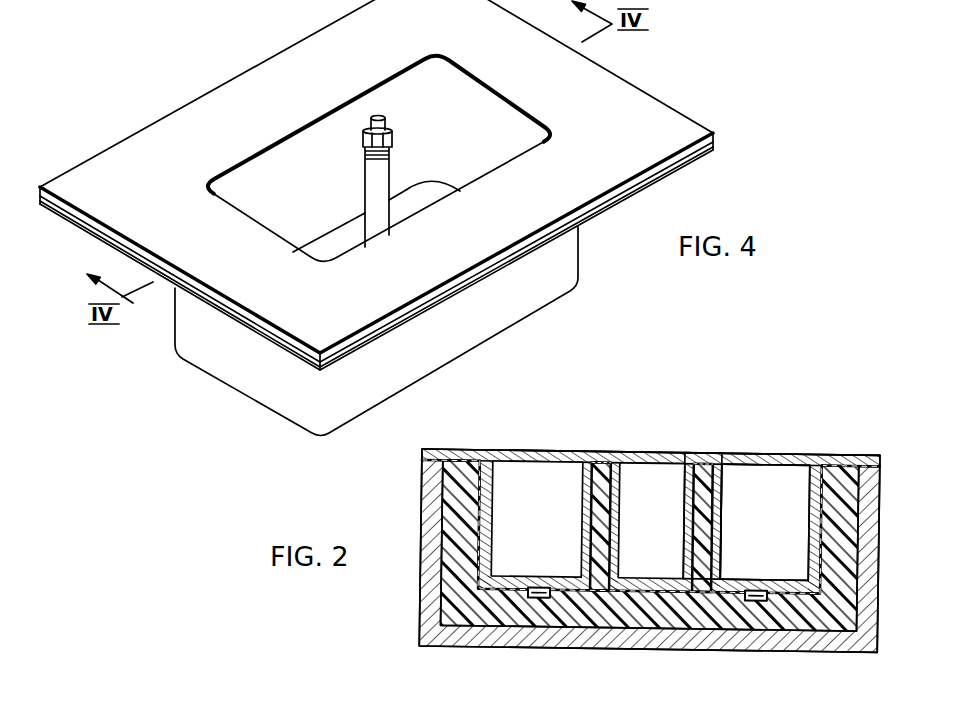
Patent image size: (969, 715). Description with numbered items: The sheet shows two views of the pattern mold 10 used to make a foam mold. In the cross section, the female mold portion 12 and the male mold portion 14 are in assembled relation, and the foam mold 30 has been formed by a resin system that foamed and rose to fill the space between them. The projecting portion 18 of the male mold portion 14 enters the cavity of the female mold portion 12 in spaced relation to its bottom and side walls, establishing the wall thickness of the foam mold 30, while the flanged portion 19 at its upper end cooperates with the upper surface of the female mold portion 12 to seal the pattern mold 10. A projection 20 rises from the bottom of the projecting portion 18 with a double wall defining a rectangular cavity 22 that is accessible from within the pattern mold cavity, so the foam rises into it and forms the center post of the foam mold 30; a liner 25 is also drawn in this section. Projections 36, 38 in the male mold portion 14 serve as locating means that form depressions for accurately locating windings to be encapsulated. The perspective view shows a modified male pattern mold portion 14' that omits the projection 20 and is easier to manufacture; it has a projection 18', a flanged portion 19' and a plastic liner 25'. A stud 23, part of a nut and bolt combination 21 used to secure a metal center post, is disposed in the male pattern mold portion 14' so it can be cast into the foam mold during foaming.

In FIG. 2, the pattern mold 10 is at (649, 569).
In FIG. 2, the female mold portion 12 is at (628, 555).
In FIG. 2, the male mold portion 14 is at (650, 501).
In FIG. 4, the male pattern mold portion 14' is at (376, 185).
In FIG. 2, the projecting portion 18 is at (765, 522).
In FIG. 4, the projection 18' is at (358, 331).
In FIG. 2, the flanged portion 19 is at (630, 446).
In FIG. 4, the flanged portion 19' is at (374, 252).
In FIG. 2, the projection 20 is at (715, 502).
In FIG. 4, the nut and bolt combination 21 is at (390, 170).
In FIG. 2, the rectangular cavity 22 is at (674, 527).
In FIG. 4, the stud 23 is at (384, 117).
In FIG. 2, the bonding layer 25 is at (599, 521).
In FIG. 4, the plastic liner 25' is at (372, 257).
In FIG. 2, the foam mold 30 is at (617, 550).
In FIG. 2, the projection 36 is at (523, 635).
In FIG. 2, the projection 38 is at (744, 638).